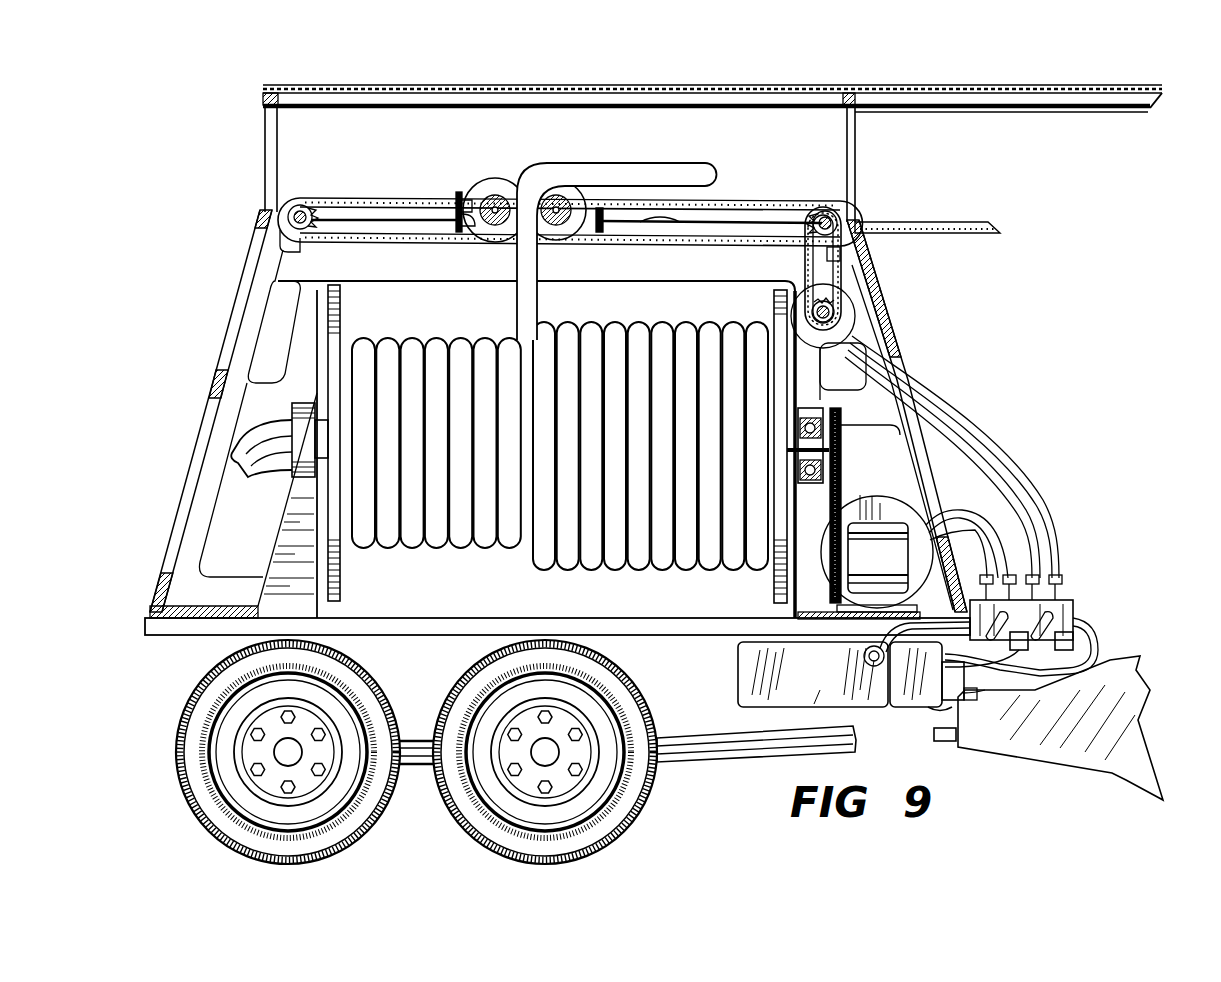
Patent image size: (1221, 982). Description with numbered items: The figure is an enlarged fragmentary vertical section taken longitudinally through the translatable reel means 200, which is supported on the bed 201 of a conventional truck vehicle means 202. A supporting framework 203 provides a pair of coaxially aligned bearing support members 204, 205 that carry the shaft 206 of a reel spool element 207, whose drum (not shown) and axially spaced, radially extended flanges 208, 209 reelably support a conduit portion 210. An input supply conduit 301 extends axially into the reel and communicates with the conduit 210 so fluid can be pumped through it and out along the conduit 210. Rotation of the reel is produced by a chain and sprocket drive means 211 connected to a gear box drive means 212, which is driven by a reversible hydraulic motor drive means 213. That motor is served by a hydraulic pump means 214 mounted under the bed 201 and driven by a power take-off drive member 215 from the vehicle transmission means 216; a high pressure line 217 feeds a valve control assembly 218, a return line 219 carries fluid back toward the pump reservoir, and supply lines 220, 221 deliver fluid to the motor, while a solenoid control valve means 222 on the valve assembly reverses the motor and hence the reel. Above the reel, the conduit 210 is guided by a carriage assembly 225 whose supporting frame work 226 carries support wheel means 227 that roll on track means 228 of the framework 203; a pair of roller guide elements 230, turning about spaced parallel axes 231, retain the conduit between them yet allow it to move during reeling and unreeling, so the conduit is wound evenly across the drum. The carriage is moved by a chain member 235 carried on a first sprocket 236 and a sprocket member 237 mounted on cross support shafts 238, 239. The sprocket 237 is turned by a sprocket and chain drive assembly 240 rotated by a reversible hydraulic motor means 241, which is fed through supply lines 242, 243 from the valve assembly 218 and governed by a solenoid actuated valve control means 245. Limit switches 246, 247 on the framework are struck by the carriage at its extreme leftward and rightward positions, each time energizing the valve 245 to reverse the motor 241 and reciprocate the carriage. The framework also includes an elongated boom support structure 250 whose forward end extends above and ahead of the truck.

The translatable reel means 200 is at (918, 347).
The bed 201 is at (190, 625).
The truck vehicle means 202 is at (648, 795).
The supporting framework 203 is at (236, 366).
The bearing support member 204 is at (306, 445).
The bearing support member 205 is at (826, 478).
The shaft 206 is at (840, 426).
The reel spool element 207 is at (345, 338).
The flange 208 is at (340, 548).
The flange 209 is at (773, 570).
The conduit portion 210 is at (662, 172).
The chain and sprocket drive means 211 is at (846, 450).
The gear box drive means 212 is at (859, 557).
The hydraulic motor drive means 213 is at (900, 530).
The hydraulic pump means 214 is at (837, 696).
The power take-off drive member 215 is at (948, 715).
The vehicle transmission means 216 is at (1040, 745).
The high pressure line 217 is at (1098, 644).
The valve control assembly 218 is at (1068, 606).
The return line 219 is at (866, 650).
The supply line 220 is at (992, 560).
The supply line 221 is at (988, 500).
The solenoid control valve means 222 is at (1022, 660).
The carriage assembly 225 is at (462, 196).
The supporting frame work 226 is at (640, 230).
The support wheel means 227 is at (460, 228).
The track means 228 is at (672, 232).
The roller guide element 230 is at (510, 188).
The axis 231 is at (492, 226).
The chain member 235 is at (444, 200).
The first sprocket 236 is at (320, 212).
The sprocket member 237 is at (815, 214).
The cross support shaft 238 is at (302, 205).
The cross support shaft 239 is at (840, 215).
The sprocket and chain drive assembly 240 is at (815, 305).
The hydraulic motor means 241 is at (860, 300).
The fluid hydraulic supply line 242 is at (975, 450).
The fluid hydraulic supply line 243 is at (1025, 482).
The solenoid actuated valve control means 245 is at (1078, 620).
The limit switch 246 is at (290, 252).
The limit switch 247 is at (862, 228).
The elongated boom support structure 250 is at (975, 86).
The supply conduit 301 is at (255, 441).